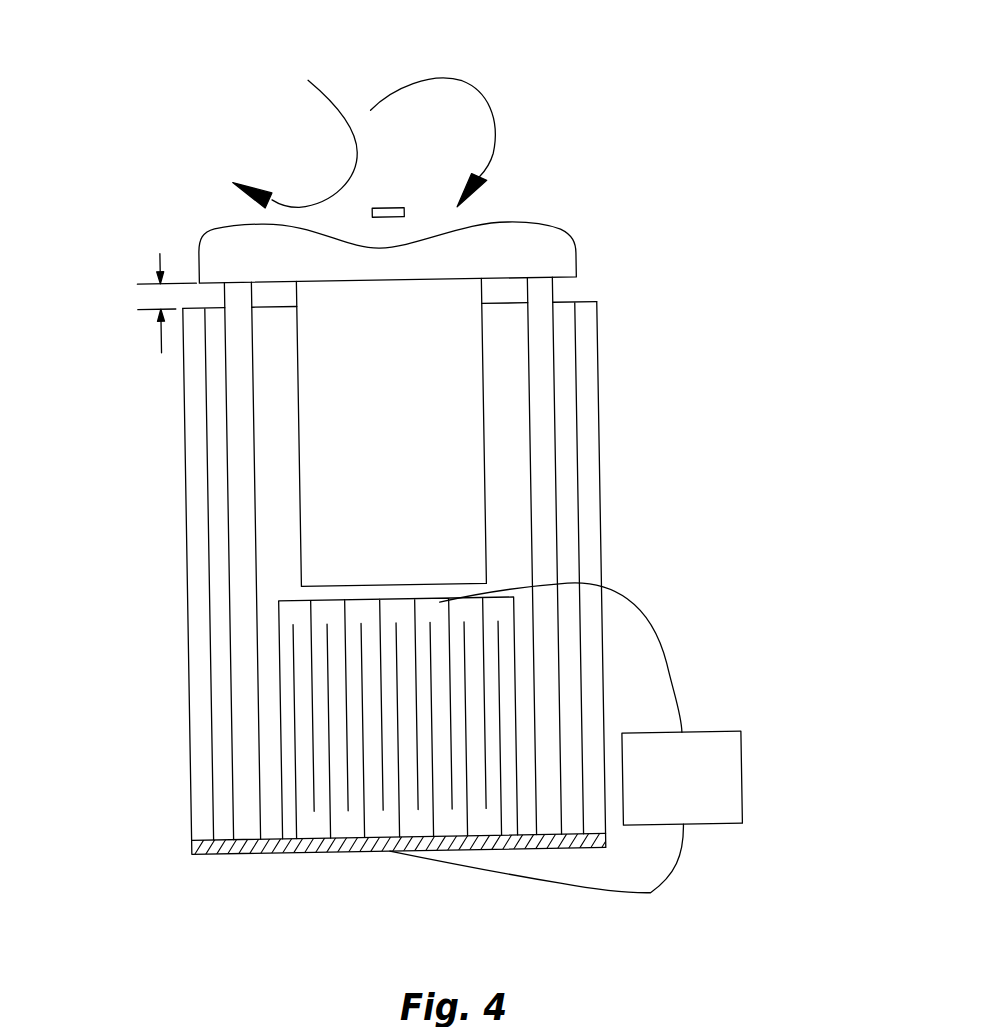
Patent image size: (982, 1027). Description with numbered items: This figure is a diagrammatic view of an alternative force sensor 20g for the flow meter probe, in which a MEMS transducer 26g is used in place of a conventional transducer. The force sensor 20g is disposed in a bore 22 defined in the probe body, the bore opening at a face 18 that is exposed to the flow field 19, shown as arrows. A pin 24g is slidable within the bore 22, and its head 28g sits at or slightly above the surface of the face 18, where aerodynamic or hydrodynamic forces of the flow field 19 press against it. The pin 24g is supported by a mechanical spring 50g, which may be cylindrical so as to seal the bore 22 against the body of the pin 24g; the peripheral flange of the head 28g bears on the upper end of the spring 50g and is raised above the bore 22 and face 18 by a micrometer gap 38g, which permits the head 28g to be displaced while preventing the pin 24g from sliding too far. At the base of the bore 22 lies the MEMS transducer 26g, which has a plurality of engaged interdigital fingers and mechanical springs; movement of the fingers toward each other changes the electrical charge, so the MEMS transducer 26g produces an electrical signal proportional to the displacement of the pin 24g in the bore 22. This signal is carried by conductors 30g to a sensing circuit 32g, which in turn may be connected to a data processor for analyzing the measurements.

The face 18 is at (589, 304).
The flow field 19 is at (498, 99).
The force sensor 20g is at (417, 524).
The bore 22 is at (205, 729).
The pin 24g is at (412, 449).
The MEMS transducer 26g is at (343, 796).
The head 28g is at (532, 234).
The conductors 30g is at (671, 674).
The sensing circuit 32g is at (738, 783).
The micrometer gap 38g is at (144, 294).
The mechanical spring 50g is at (240, 428).